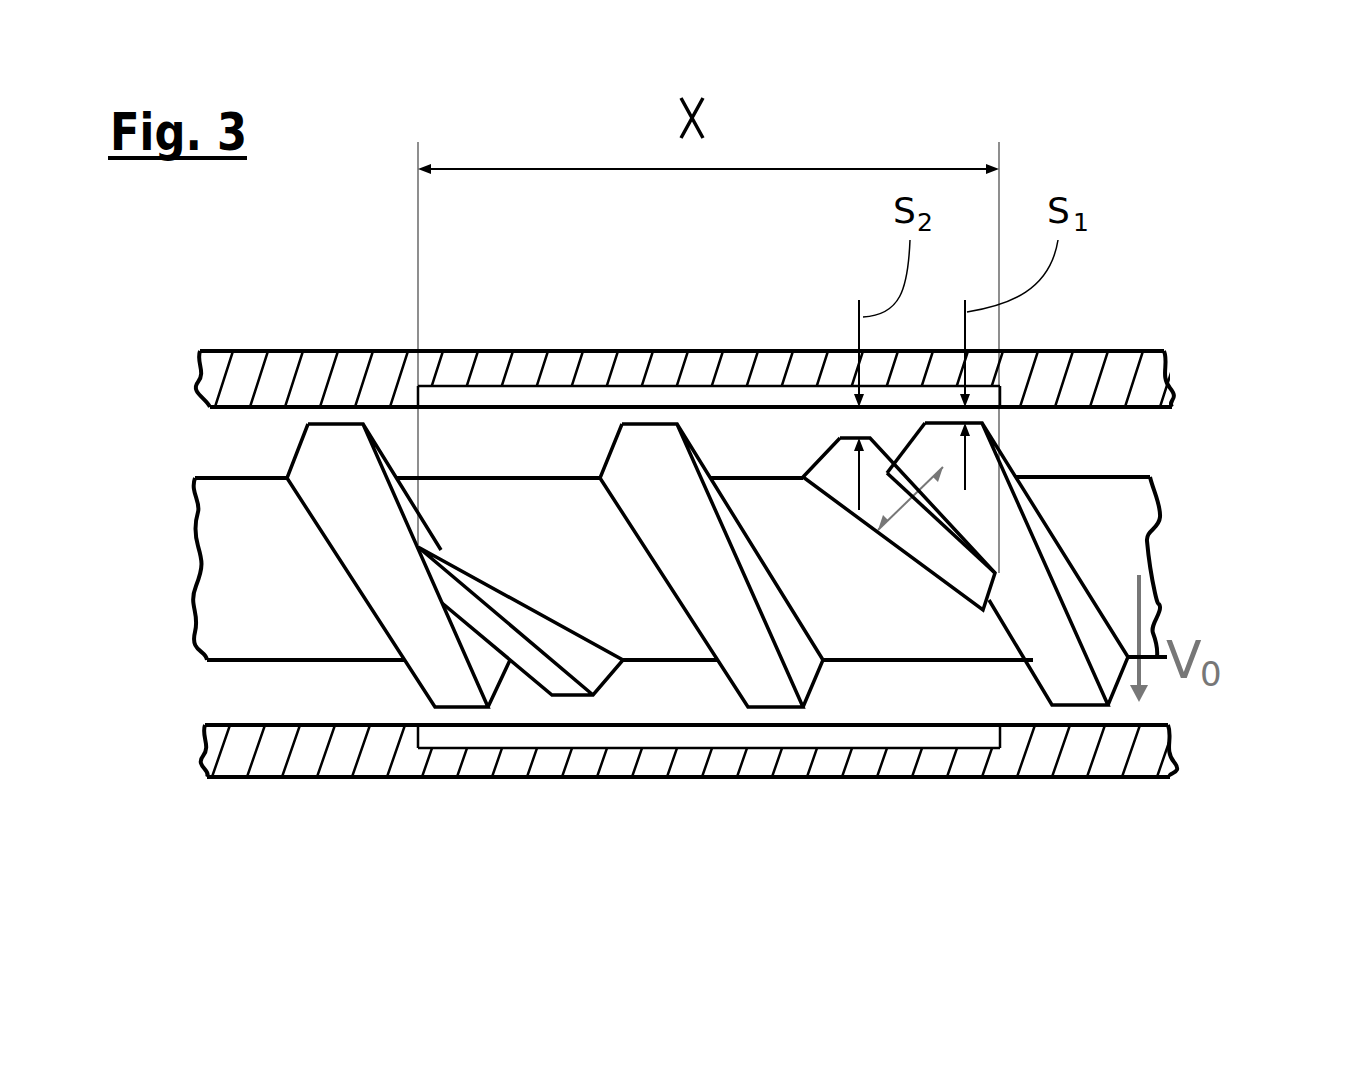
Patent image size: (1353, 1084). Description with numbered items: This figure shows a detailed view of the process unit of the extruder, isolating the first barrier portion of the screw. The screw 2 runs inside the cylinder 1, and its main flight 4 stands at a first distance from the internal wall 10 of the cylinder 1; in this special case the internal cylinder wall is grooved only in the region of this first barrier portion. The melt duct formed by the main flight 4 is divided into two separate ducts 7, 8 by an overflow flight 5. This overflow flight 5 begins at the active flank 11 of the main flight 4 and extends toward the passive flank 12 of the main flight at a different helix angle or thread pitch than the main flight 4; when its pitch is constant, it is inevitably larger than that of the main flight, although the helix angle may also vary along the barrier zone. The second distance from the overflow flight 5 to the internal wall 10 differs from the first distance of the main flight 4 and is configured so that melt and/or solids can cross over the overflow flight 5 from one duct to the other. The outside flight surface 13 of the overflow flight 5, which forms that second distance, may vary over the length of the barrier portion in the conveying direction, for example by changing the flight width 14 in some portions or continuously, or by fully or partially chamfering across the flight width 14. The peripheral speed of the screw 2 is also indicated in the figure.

The cylinder 1 is at (1138, 366).
The screw 2 is at (1124, 527).
The main flight 4 is at (343, 473).
The overflow flight 5 is at (928, 550).
The duct 7 is at (517, 687).
The duct 8 is at (897, 440).
The internal wall 10 is at (1002, 723).
The active flank 11 is at (653, 537).
The passive flank 12 is at (768, 603).
The outside flight surface 13 is at (887, 470).
The flight width 14 is at (900, 490).